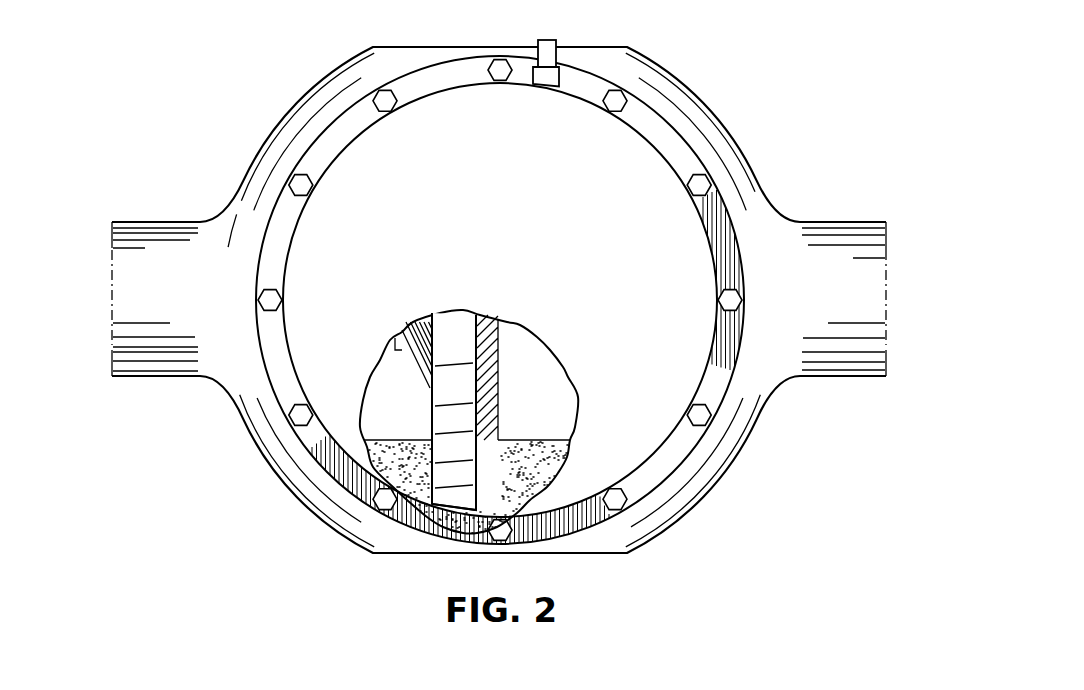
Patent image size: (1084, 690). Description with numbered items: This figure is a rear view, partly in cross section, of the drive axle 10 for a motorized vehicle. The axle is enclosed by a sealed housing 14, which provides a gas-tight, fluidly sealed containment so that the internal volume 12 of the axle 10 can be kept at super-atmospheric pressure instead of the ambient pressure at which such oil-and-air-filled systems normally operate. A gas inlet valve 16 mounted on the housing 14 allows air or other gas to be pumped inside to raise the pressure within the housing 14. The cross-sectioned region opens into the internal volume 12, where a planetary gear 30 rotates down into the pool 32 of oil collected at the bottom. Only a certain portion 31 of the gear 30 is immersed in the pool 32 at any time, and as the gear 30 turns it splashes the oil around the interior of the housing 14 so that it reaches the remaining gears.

The drive axle 10 is at (754, 56).
The internal volume 12 is at (469, 422).
The sealed housing 14 is at (639, 126).
The gas inlet valve 16 is at (545, 42).
The planetary gear 30 is at (429, 424).
The immersed portion of the gear 31 is at (447, 468).
The pool of oil 32 is at (540, 480).